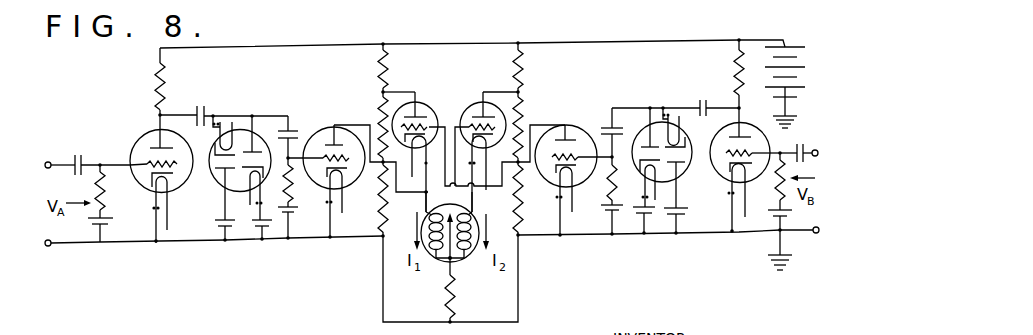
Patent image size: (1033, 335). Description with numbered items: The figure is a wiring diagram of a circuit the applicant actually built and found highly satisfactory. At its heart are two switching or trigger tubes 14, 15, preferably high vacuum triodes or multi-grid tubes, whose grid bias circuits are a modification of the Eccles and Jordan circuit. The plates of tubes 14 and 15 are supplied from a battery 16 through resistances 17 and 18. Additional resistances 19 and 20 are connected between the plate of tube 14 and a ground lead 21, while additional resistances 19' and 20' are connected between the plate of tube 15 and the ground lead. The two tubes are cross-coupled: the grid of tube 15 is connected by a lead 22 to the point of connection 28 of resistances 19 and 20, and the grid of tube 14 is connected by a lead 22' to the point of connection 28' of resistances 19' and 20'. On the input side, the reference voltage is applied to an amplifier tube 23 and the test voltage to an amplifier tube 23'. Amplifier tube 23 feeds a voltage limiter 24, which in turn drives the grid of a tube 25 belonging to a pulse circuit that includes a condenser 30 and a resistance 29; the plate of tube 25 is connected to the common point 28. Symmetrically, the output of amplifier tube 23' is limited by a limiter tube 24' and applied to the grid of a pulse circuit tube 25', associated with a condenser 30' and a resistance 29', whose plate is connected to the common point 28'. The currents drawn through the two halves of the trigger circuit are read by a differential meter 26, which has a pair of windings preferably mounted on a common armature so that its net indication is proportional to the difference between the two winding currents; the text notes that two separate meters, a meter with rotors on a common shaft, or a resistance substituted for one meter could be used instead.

The switching or trigger tube 14 is at (425, 100).
The switching or trigger tube 15 is at (463, 100).
The battery 16 is at (792, 44).
The resistance 17 is at (380, 69).
The resistance 18 is at (523, 70).
The additional resistance 19 is at (367, 123).
The additional resistance 19' is at (539, 123).
The additional resistance 20 is at (362, 218).
The additional resistance 20' is at (532, 217).
The ground lead 21 is at (382, 284).
The lead 22 is at (410, 209).
The lead 22' is at (490, 209).
The amplifier tube 23 is at (149, 184).
The amplifier tube 23' is at (745, 135).
The voltage limiter 24 is at (240, 164).
The limiter tube 24' is at (670, 160).
The pulse circuit tube 25 is at (326, 170).
The pulse circuit tube 25' is at (573, 168).
The differential meter 26 is at (457, 268).
The point of connection 28 is at (370, 185).
The point of connection 28' is at (532, 186).
The resistance 29 is at (298, 202).
The resistance 29' is at (599, 200).
The condenser 30 is at (295, 114).
The condenser 30' is at (620, 126).